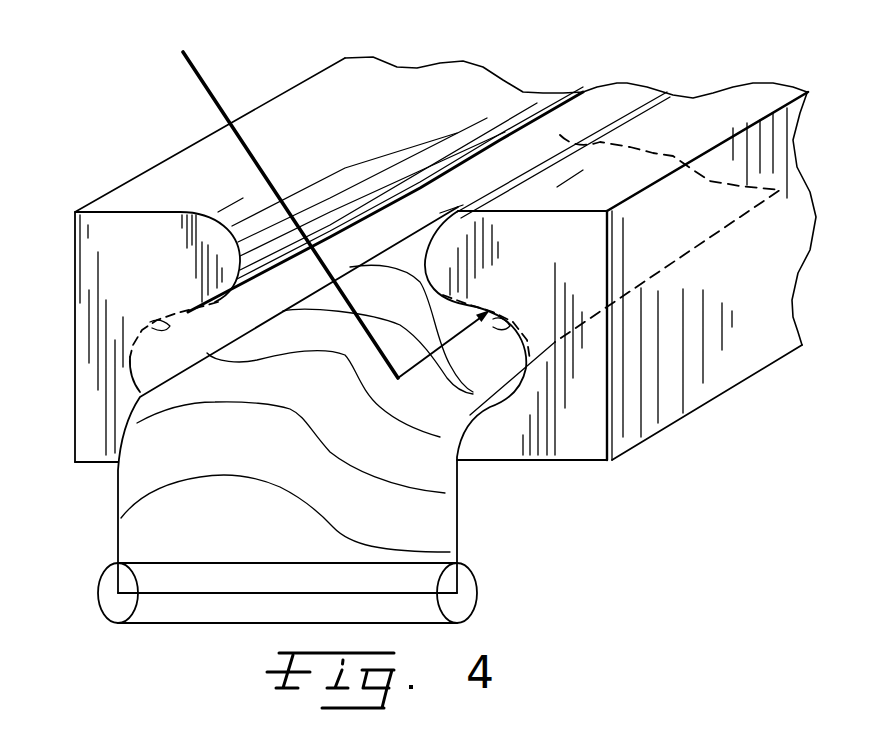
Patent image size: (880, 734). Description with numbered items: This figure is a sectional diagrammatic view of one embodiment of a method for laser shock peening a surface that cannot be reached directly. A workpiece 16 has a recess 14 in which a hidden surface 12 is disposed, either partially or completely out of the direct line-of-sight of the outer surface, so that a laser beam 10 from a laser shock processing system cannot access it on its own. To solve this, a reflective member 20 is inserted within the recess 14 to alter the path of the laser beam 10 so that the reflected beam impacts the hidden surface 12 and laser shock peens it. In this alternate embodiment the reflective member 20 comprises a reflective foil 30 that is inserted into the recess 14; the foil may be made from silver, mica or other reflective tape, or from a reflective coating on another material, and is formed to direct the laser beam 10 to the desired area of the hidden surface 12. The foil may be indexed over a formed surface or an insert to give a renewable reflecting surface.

The laser beam 10 is at (198, 74).
The hidden surface 12 is at (150, 322).
The recess 14 is at (160, 365).
The workpiece 16 is at (587, 437).
The reflective member 20 is at (472, 506).
The reflective foil 30 is at (147, 483).